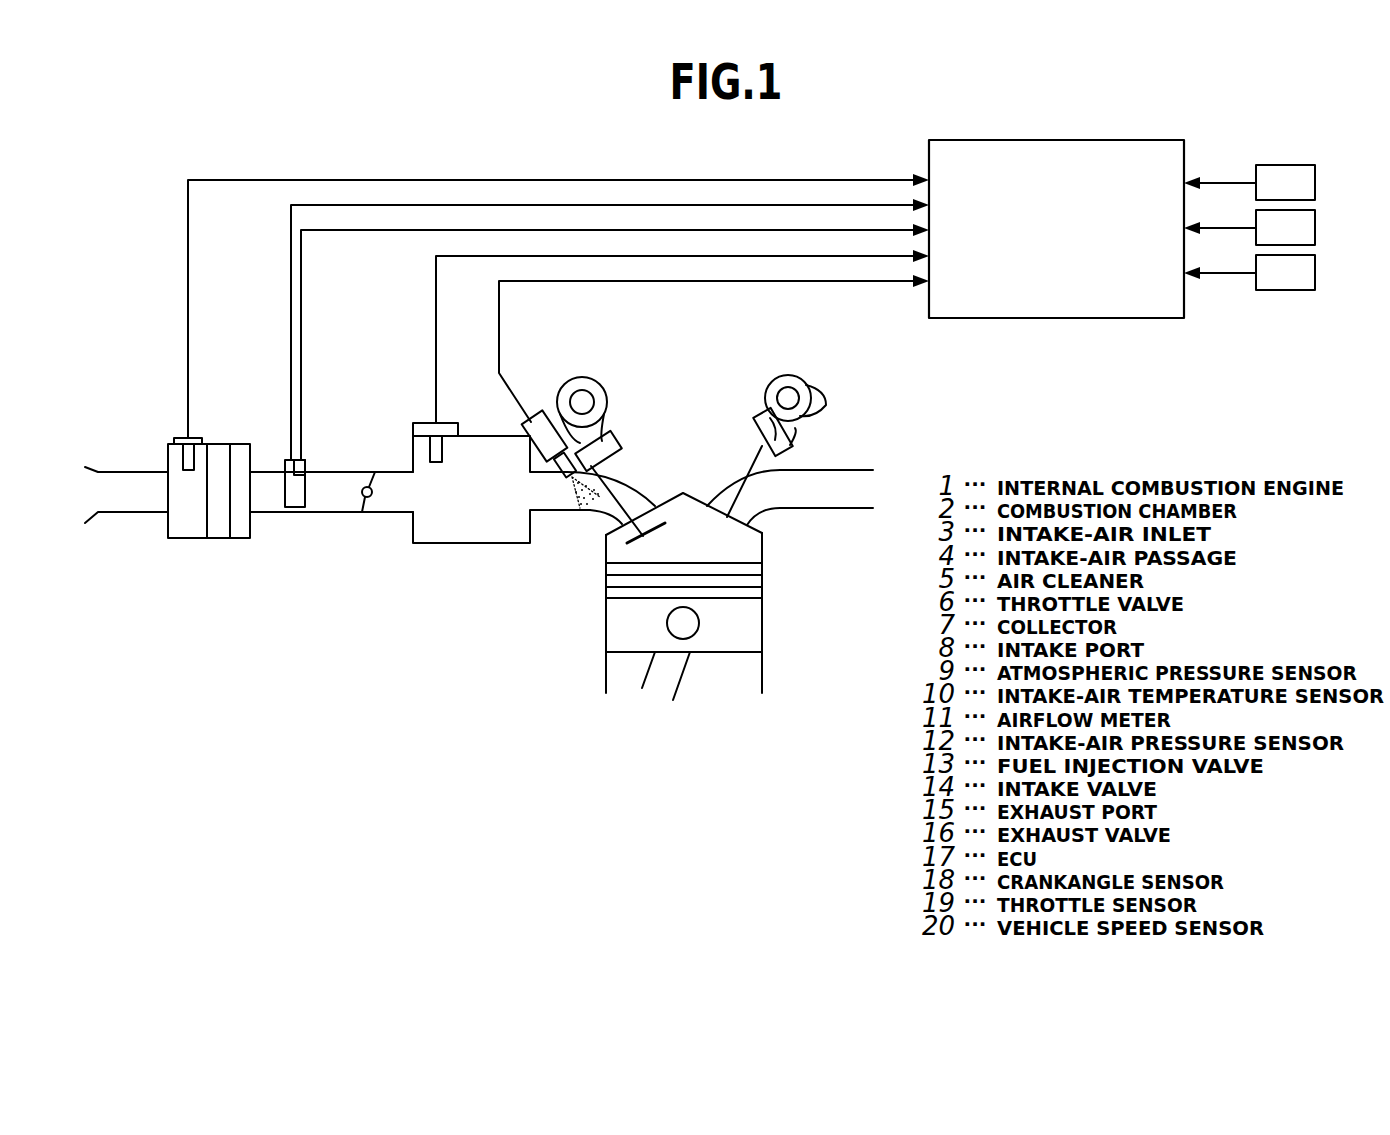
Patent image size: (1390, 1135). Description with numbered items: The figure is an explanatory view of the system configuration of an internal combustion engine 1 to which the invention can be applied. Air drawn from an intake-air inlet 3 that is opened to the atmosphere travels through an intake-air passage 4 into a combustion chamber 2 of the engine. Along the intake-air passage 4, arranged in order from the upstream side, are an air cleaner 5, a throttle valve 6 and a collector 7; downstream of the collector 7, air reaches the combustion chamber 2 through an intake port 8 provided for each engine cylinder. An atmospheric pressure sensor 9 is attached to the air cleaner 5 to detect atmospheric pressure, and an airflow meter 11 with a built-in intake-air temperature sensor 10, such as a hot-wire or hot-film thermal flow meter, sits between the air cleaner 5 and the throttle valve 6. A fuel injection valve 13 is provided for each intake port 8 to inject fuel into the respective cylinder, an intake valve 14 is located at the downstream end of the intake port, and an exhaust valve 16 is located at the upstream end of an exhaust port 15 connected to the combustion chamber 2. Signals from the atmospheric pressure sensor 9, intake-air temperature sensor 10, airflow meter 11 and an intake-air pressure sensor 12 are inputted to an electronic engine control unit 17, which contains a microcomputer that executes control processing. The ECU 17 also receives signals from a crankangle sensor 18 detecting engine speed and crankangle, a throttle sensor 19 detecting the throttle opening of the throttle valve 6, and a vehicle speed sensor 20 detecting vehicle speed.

The internal combustion engine 1 is at (533, 647).
The combustion chamber 2 is at (685, 492).
The intake-air inlet 3 is at (90, 467).
The intake-air passage 4 is at (330, 513).
The air cleaner 5 is at (240, 444).
The throttle valve 6 is at (368, 513).
The collector 7 is at (470, 544).
The intake port 8 is at (600, 507).
The atmospheric pressure sensor 9 is at (183, 437).
The intake-air temperature sensor 10 is at (305, 462).
The airflow meter 11 is at (285, 468).
The intake-air pressure sensor 12 is at (425, 423).
The fuel injection valve 13 is at (535, 410).
The intake valve 14 is at (628, 493).
The exhaust port 15 is at (775, 503).
The exhaust valve 16 is at (733, 484).
The electronic engine control unit 17 is at (1176, 140).
The crankangle sensor 18 is at (1287, 170).
The throttle sensor 19 is at (1307, 222).
The vehicle speed sensor 20 is at (1287, 285).